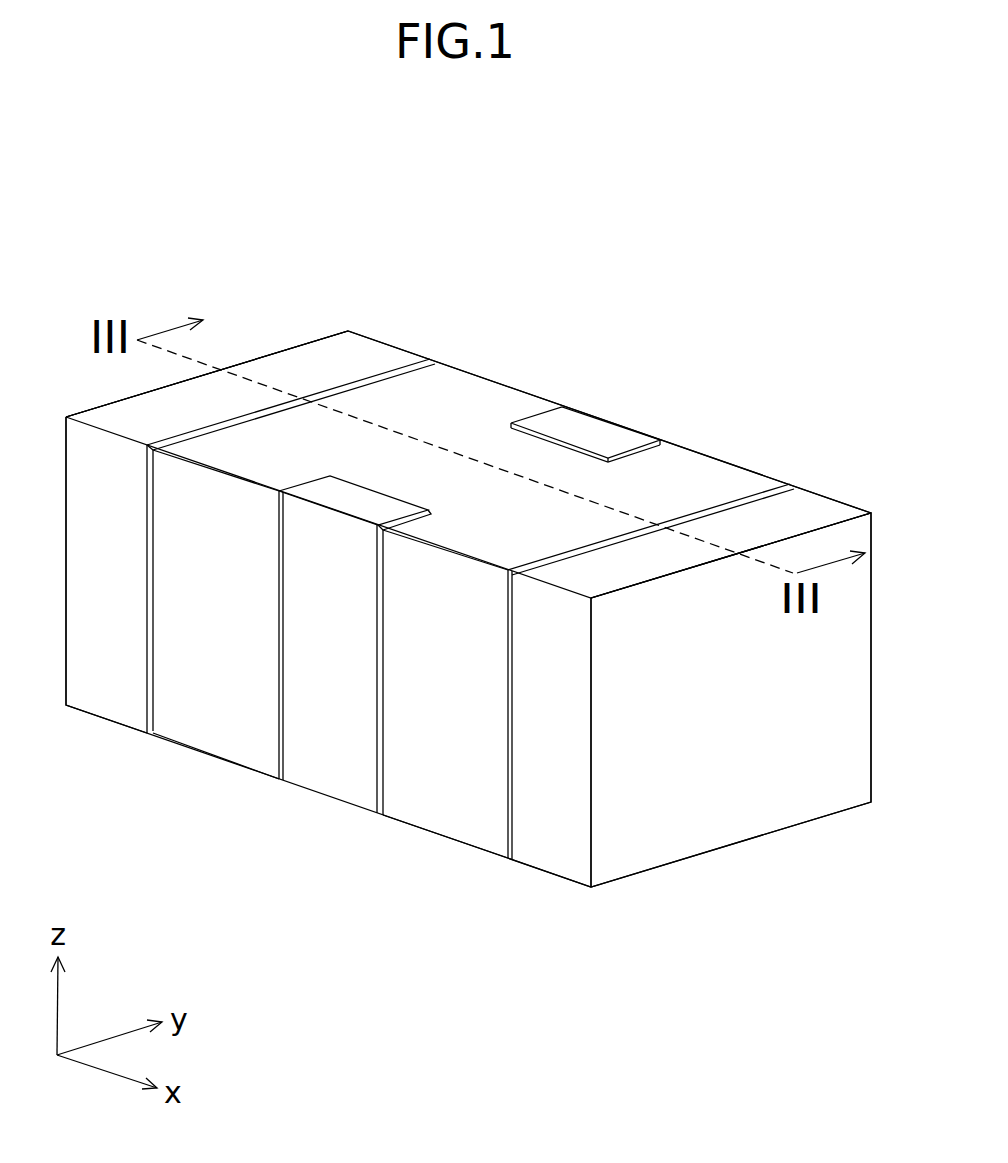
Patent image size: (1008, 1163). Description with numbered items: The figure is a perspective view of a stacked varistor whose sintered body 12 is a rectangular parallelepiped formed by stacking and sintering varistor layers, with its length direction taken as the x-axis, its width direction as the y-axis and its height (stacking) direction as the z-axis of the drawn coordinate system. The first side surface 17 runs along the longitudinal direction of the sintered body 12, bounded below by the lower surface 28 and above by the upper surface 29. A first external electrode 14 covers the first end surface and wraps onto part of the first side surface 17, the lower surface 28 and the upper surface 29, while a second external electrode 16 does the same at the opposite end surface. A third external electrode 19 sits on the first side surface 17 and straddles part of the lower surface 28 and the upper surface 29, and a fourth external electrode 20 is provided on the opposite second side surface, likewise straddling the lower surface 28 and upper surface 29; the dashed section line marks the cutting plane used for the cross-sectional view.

The sintered body 12 is at (487, 400).
The first external electrode 14 is at (105, 663).
The second external electrode 16 is at (562, 833).
The first side surface 17 is at (434, 783).
The third external electrode 19 is at (333, 760).
The fourth external electrode 20 is at (615, 434).
The lower surface 28 is at (215, 748).
The upper surface 29 is at (402, 400).